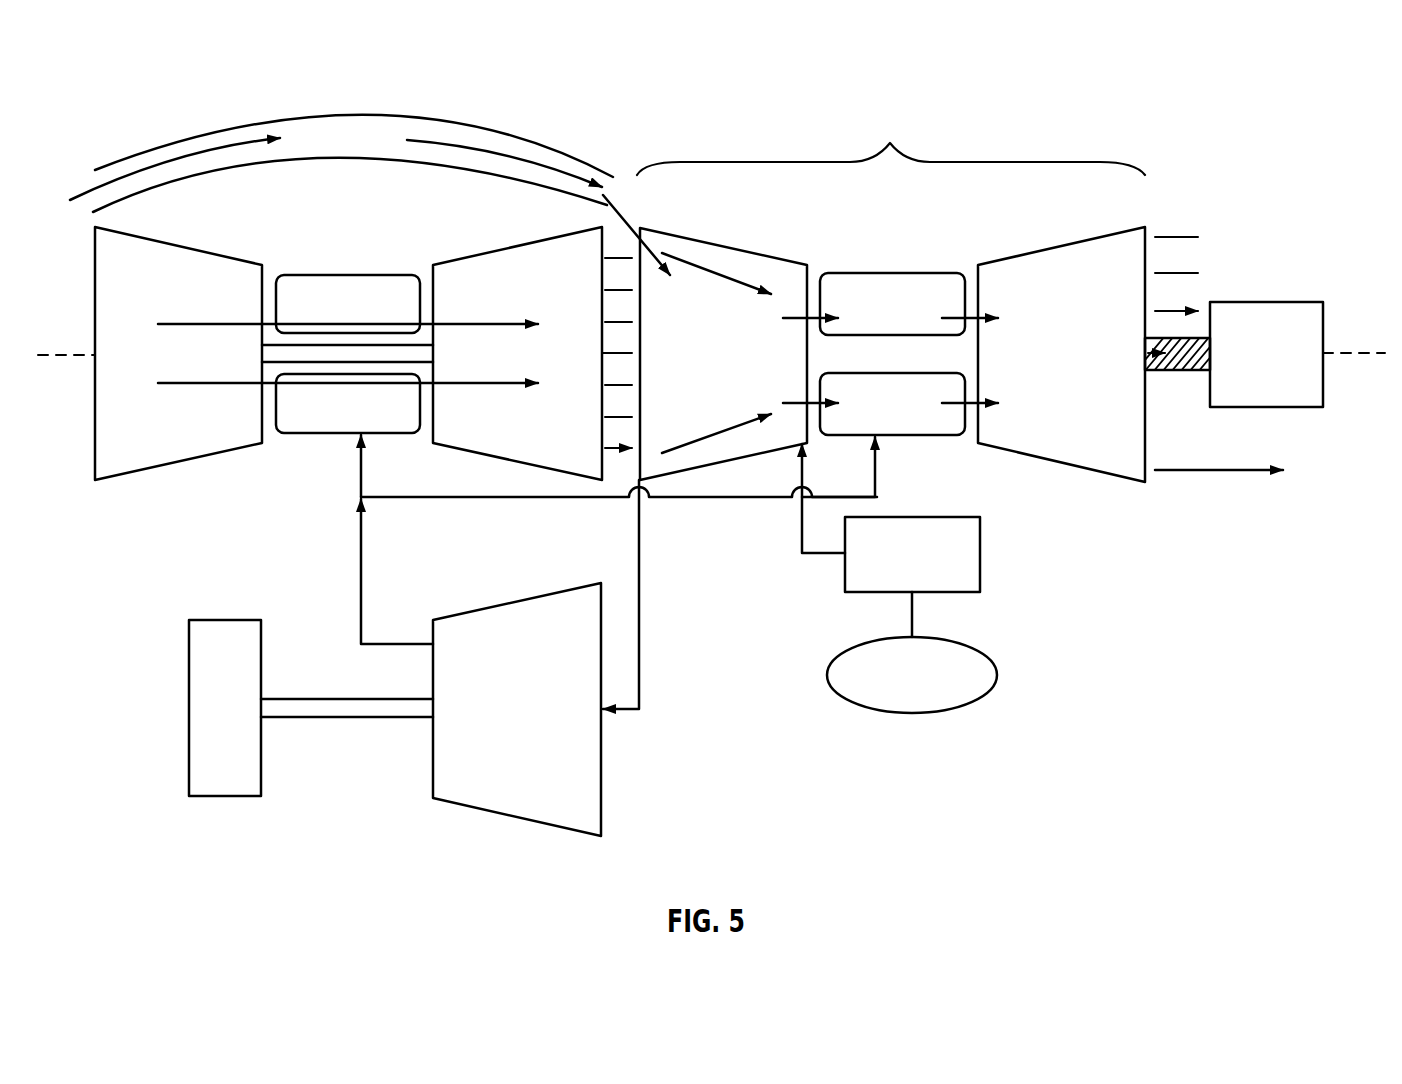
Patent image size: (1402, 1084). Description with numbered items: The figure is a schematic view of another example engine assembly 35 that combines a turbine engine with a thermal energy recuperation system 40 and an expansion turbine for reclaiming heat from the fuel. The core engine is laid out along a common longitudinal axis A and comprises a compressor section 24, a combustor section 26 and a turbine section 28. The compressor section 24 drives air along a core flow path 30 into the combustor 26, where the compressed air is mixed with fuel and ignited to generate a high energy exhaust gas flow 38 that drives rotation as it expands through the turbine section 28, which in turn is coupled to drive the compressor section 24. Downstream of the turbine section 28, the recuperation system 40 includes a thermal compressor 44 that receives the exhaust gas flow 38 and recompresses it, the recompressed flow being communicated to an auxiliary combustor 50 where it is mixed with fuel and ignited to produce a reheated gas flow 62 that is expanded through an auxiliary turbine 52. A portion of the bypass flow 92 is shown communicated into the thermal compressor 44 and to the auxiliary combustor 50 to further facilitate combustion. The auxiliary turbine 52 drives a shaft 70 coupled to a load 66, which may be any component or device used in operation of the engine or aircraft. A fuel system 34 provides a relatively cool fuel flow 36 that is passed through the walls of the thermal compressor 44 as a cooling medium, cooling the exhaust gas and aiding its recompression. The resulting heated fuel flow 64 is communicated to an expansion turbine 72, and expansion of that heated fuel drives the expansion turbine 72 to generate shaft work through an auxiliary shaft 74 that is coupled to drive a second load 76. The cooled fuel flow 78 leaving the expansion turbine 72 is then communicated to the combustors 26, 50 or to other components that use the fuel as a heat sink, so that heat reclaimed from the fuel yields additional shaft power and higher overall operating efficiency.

The longitudinal axis A is at (50, 360).
The engine assembly 35 is at (88, 130).
The exhaust gas flow 38 is at (366, 138).
The bypass flow 92 is at (525, 158).
The compressor section 24 is at (178, 242).
The core flow path 30 is at (210, 320).
The combustor section 26 is at (347, 275).
The turbine section 28 is at (518, 243).
The thermal compressor 44 is at (722, 243).
The recuperation system 40 is at (891, 141).
The auxiliary combustor 50 is at (878, 273).
The auxiliary turbine 52 is at (1052, 247).
The reheated gas flow 62 is at (1186, 224).
The shaft 70 is at (1160, 373).
The load 66 is at (1277, 302).
The fuel system 34 is at (928, 517).
The fuel flow 36 is at (800, 528).
The heated fuel flow 64 is at (640, 601).
The cooled fuel flow 78 is at (358, 570).
The expansion turbine 72 is at (518, 818).
The auxiliary shaft 74 is at (343, 718).
The load 76 is at (222, 620).